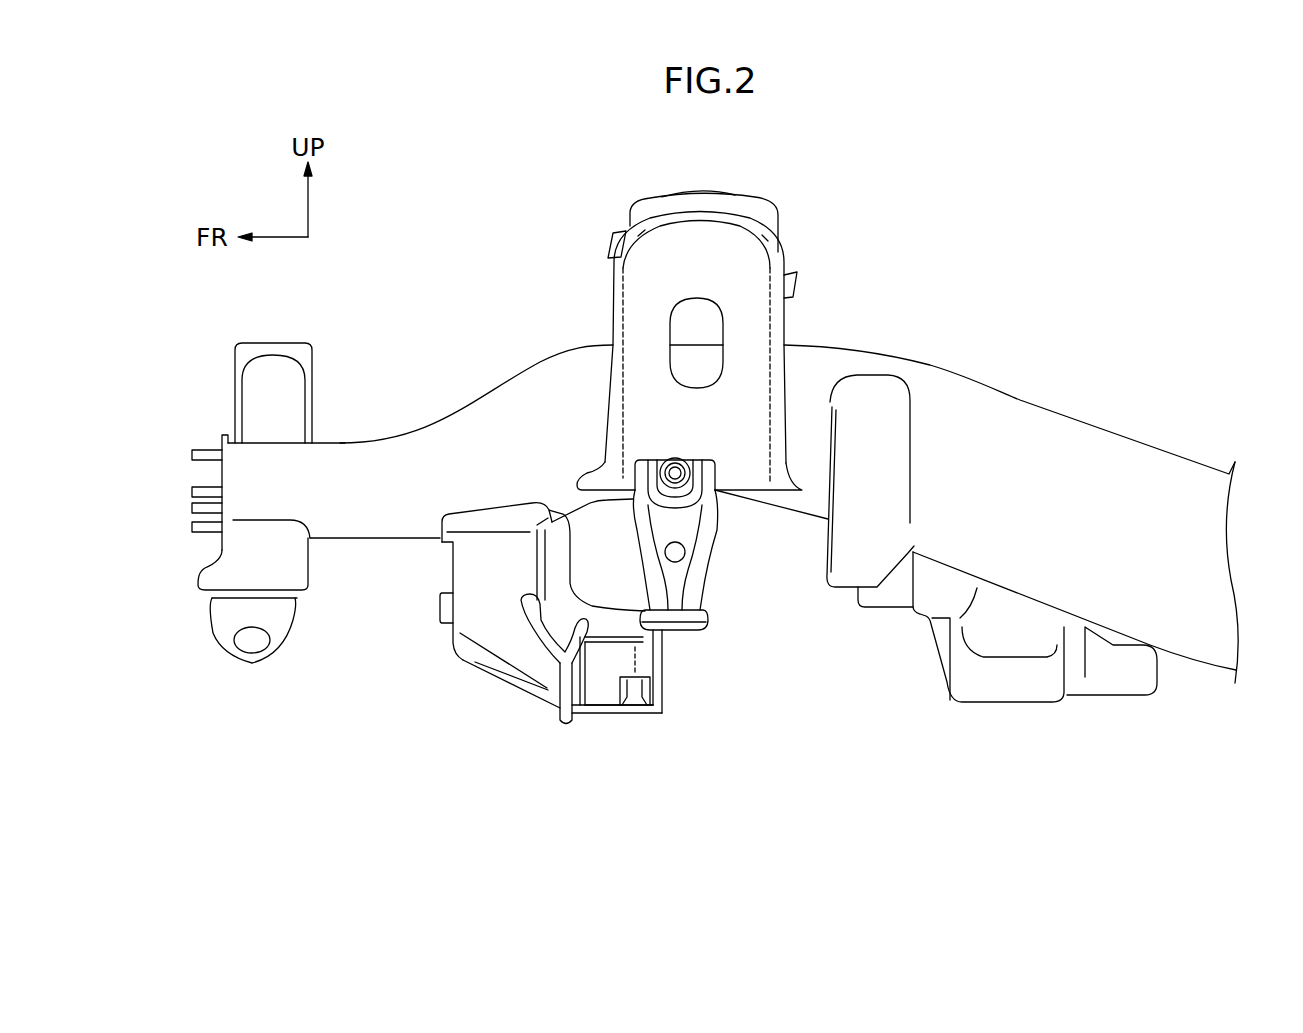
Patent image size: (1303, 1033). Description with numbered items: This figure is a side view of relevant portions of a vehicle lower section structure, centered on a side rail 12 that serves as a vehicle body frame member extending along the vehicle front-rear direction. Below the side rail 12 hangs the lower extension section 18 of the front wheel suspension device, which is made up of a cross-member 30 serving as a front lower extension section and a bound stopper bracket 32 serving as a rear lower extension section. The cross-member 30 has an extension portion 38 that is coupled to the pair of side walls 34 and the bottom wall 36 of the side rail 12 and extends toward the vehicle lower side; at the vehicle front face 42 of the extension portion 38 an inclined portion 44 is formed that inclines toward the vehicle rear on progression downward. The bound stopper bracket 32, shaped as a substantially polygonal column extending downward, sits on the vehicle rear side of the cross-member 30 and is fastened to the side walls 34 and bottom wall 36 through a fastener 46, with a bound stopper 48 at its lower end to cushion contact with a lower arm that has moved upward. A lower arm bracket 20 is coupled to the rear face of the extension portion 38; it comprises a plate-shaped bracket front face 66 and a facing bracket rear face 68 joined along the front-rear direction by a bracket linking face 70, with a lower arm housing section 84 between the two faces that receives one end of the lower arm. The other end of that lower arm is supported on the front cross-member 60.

The side rail 12 is at (715, 478).
The lower extension section 18 is at (562, 627).
The lower arm bracket 20 is at (655, 730).
The cross-member 30 is at (513, 611).
The bound stopper bracket 32 is at (718, 519).
The side wall 34 is at (360, 492).
The bottom wall 36 is at (372, 540).
The extension portion 38 is at (478, 577).
The vehicle front face 42 is at (444, 640).
The inclined portion 44 is at (500, 678).
The fastener 46 is at (675, 462).
The bound stopper 48 is at (703, 620).
The front cross-member 60 is at (1082, 683).
The bracket front face 66 is at (565, 724).
The bracket rear face 68 is at (657, 696).
The bracket linking face 70 is at (608, 617).
The lower arm housing section 84 is at (603, 683).